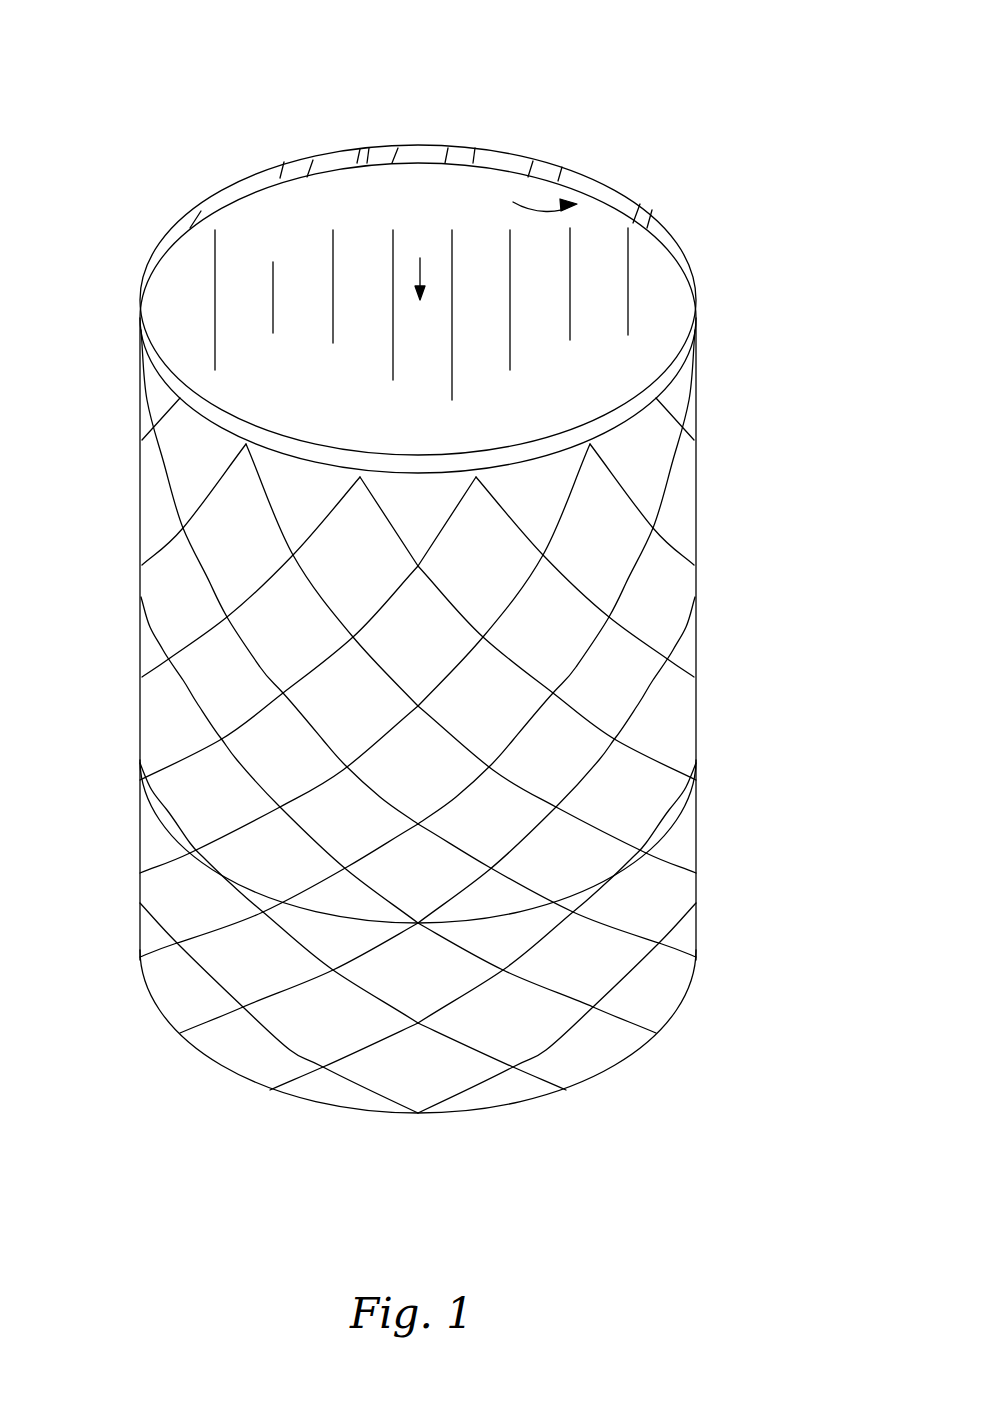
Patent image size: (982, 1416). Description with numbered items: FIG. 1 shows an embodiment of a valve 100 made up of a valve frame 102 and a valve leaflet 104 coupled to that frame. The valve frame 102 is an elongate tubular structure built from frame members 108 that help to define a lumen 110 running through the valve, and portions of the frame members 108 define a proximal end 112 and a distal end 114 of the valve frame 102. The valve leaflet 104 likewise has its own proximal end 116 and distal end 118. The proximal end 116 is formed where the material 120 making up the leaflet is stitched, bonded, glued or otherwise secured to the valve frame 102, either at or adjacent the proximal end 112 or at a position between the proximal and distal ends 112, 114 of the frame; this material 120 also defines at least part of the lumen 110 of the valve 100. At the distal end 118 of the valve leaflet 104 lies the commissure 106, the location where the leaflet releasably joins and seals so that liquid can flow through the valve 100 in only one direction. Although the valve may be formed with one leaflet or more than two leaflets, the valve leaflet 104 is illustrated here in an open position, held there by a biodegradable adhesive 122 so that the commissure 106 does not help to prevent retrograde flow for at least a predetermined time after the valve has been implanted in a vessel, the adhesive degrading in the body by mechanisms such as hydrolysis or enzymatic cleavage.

The valve 100 is at (157, 82).
The valve frame 102 is at (458, 145).
The valve leaflet 104 is at (447, 351).
The commissure 106 is at (333, 172).
The frame members 108 is at (382, 165).
The lumen 110 is at (429, 263).
The proximal end 112 is at (726, 966).
The distal end 114 is at (712, 311).
The proximal end 116 is at (697, 912).
The distal end 118 is at (358, 148).
The material 120 is at (523, 200).
The biodegradable adhesive 122 is at (234, 188).